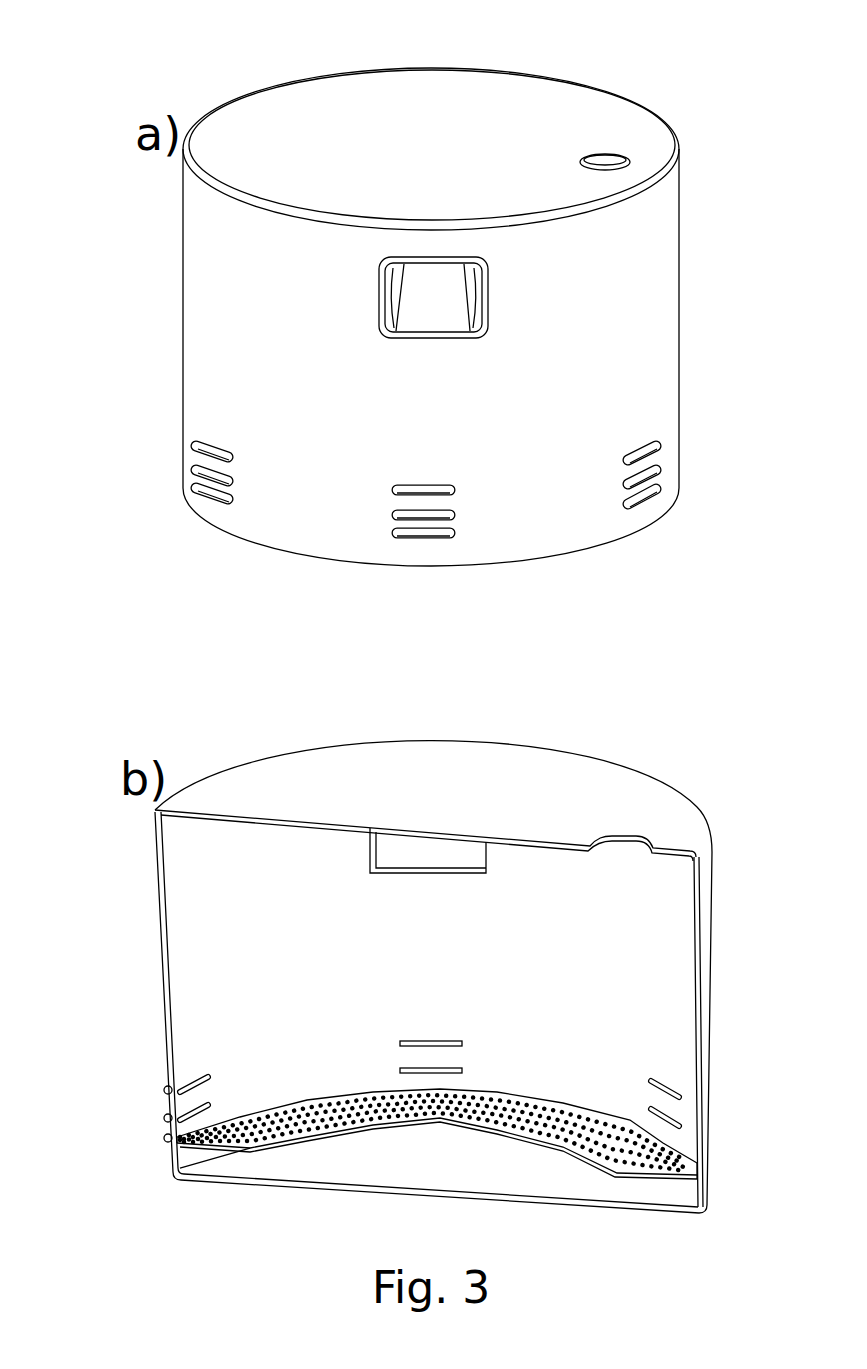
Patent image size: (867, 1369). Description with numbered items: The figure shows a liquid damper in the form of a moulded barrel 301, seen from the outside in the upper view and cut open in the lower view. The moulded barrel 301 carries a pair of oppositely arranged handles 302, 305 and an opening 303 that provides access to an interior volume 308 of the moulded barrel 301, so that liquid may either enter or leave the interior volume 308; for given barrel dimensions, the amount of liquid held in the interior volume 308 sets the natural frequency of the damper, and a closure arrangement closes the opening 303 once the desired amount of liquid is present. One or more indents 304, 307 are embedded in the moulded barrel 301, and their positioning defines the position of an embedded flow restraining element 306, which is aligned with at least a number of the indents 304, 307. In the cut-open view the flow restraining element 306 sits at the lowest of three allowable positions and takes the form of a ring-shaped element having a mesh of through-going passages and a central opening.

The moulded barrel 301 is at (667, 297).
The handle 302 is at (437, 280).
The opening 303 is at (608, 167).
The indent 304 is at (658, 448).
The handle 305 is at (423, 852).
The flow restraining element 306 is at (666, 1155).
The indent 307 is at (167, 1140).
The interior volume 308 is at (183, 855).